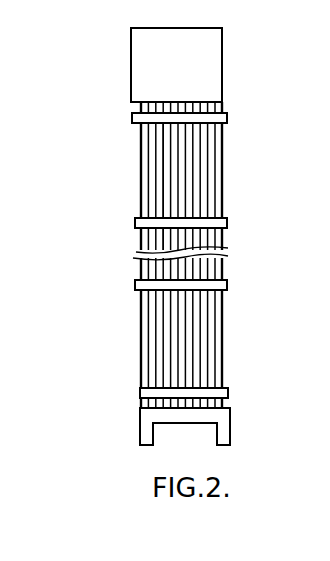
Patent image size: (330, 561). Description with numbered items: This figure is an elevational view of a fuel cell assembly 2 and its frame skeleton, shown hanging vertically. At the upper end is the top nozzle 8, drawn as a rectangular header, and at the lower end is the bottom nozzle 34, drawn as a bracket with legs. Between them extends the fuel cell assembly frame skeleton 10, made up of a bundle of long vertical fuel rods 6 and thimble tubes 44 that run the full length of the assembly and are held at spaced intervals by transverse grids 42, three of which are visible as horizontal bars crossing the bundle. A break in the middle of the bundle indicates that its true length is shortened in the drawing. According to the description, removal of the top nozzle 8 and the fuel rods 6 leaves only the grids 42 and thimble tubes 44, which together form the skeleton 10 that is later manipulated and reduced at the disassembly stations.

The fuel cell assembly 2 is at (189, 236).
The fuel rods 6 is at (161, 151).
The top nozzle 8 is at (146, 56).
The fuel cell assembly frame skeleton 10 is at (182, 255).
The bottom nozzle 34 is at (231, 423).
The grids 42 is at (228, 117).
The thimble tubes 44 is at (205, 183).